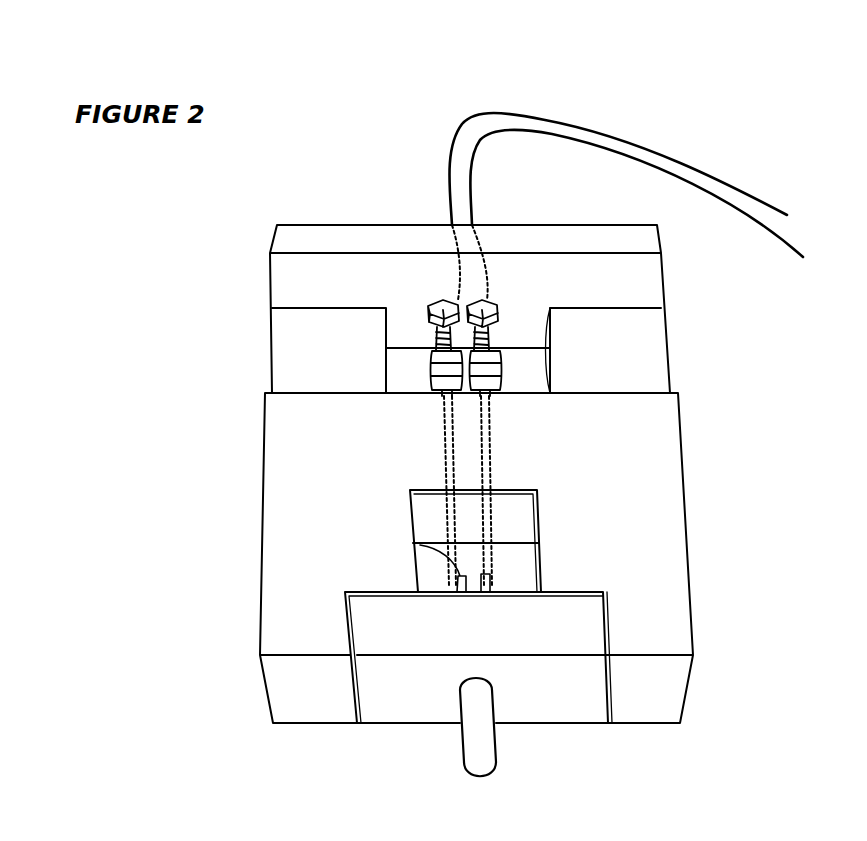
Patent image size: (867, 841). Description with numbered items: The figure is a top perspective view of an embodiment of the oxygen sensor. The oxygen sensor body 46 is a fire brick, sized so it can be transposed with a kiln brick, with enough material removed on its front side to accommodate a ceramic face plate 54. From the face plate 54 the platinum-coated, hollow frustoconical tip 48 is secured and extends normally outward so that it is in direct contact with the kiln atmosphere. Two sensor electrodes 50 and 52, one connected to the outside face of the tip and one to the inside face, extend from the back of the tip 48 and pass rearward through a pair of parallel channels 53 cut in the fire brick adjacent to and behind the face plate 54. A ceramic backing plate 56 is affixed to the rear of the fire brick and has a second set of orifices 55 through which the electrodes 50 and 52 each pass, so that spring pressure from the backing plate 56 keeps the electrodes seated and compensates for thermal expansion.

The oxygen sensor body 46 is at (672, 507).
The frustoconical tip 48 is at (478, 705).
The outside face electrode 50 is at (462, 590).
The inside face electrode 52 is at (470, 547).
The parallel channels 53 is at (445, 450).
The ceramic face plate 54 is at (585, 685).
The orifices 55 is at (455, 300).
The ceramic backing plate 56 is at (662, 236).